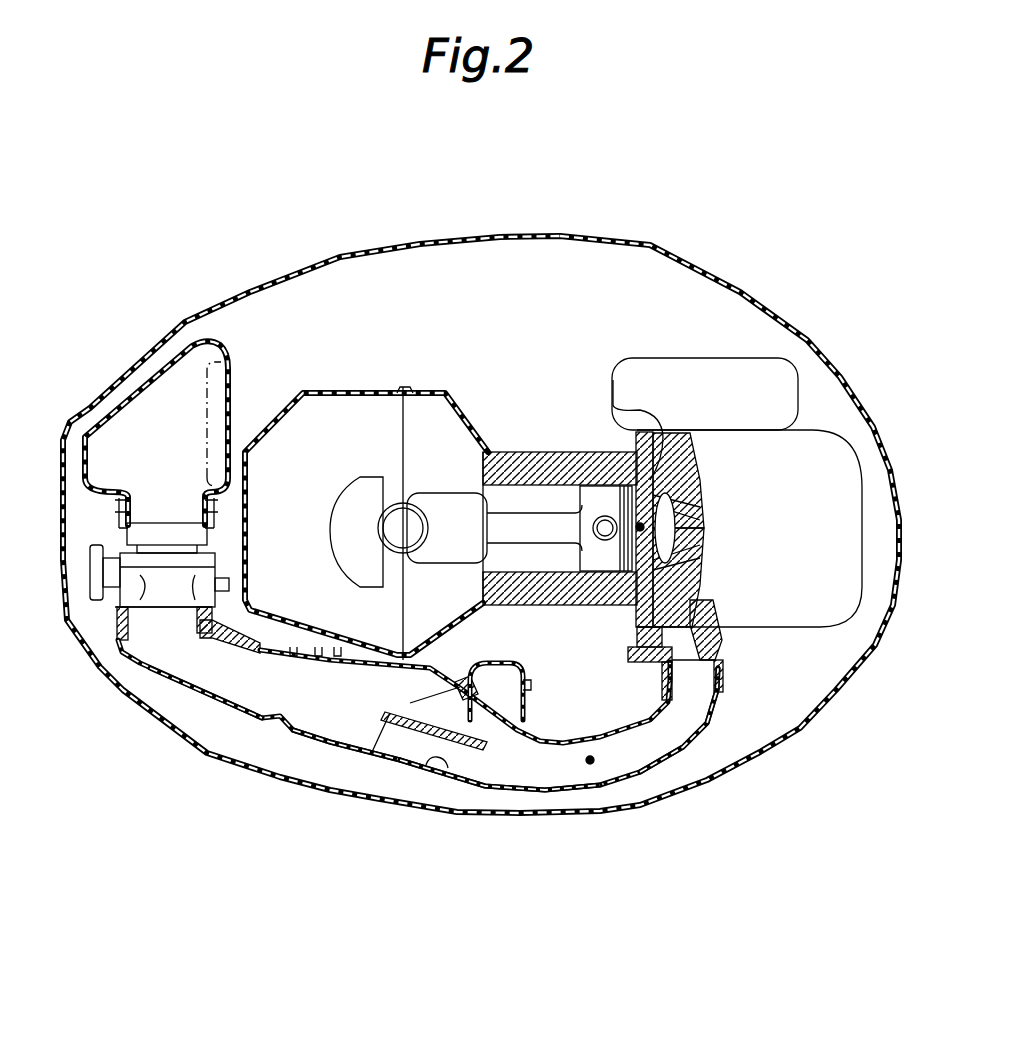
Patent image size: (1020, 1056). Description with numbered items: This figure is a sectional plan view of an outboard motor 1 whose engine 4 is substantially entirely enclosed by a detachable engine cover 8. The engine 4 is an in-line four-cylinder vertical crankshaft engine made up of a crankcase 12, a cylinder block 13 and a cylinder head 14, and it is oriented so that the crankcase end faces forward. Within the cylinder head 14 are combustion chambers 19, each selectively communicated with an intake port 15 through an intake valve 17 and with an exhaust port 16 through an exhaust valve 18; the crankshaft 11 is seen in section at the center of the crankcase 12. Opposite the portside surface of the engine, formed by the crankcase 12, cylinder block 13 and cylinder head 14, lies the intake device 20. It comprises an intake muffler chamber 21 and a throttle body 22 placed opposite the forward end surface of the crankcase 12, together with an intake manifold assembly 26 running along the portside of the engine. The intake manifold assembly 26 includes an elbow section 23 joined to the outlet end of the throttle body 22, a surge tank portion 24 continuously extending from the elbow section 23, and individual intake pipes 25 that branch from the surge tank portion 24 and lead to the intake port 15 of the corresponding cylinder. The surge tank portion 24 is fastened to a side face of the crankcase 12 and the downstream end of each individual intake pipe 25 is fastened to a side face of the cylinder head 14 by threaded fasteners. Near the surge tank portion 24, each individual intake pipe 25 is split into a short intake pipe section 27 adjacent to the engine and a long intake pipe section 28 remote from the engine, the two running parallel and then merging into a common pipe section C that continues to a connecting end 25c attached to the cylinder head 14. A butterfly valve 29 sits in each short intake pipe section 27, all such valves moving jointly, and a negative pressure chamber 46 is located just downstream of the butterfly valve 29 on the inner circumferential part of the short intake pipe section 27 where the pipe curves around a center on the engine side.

The outboard motor 1 is at (481, 503).
The engine 4 is at (553, 512).
The engine cover 8 is at (483, 238).
The crankshaft 11 is at (403, 508).
The crankcase 12 is at (332, 397).
The cylinder block 13 is at (531, 452).
The cylinder head 14 is at (723, 437).
The intake port 15 is at (732, 640).
The exhaust port 16 is at (663, 443).
The intake valve 17 is at (700, 547).
The exhaust valve 18 is at (700, 510).
The combustion chamber 19 is at (622, 565).
The intake device 20 is at (137, 661).
The intake muffler chamber 21 is at (148, 370).
The throttle body 22 is at (115, 585).
The elbow section 23 is at (237, 716).
The surge tank portion 24 is at (322, 728).
The individual intake pipe 25 is at (485, 788).
The connecting end 25c is at (722, 674).
The intake manifold assembly 26 is at (310, 784).
The short intake pipe section 27 is at (463, 684).
The long intake pipe section 28 is at (401, 805).
The butterfly valve 29 is at (495, 718).
The negative pressure chamber 46 is at (503, 668).
The common pipe section C is at (622, 823).